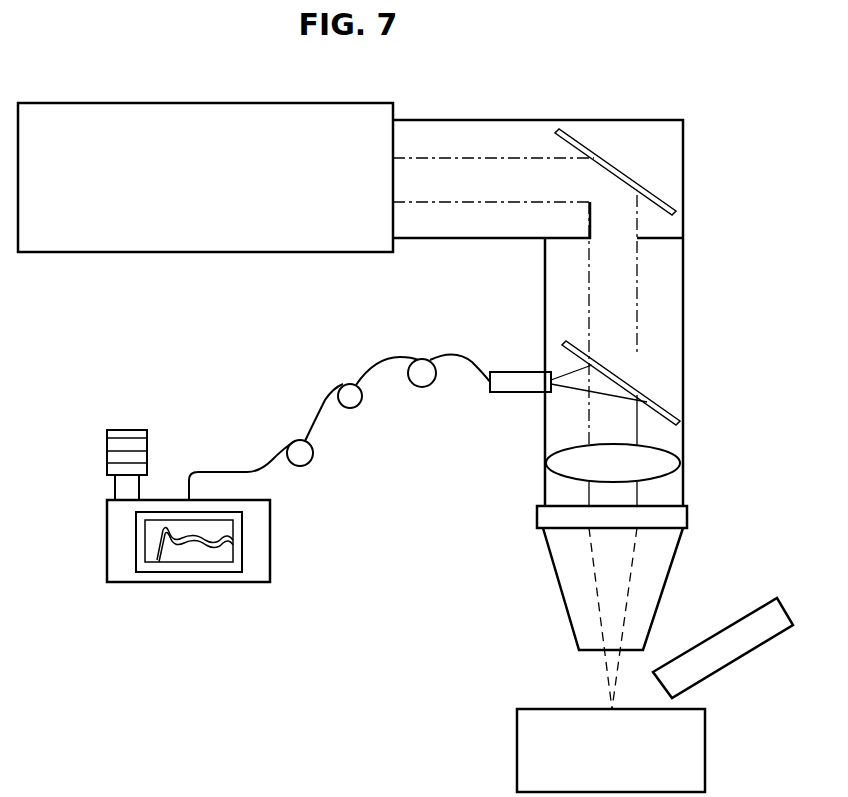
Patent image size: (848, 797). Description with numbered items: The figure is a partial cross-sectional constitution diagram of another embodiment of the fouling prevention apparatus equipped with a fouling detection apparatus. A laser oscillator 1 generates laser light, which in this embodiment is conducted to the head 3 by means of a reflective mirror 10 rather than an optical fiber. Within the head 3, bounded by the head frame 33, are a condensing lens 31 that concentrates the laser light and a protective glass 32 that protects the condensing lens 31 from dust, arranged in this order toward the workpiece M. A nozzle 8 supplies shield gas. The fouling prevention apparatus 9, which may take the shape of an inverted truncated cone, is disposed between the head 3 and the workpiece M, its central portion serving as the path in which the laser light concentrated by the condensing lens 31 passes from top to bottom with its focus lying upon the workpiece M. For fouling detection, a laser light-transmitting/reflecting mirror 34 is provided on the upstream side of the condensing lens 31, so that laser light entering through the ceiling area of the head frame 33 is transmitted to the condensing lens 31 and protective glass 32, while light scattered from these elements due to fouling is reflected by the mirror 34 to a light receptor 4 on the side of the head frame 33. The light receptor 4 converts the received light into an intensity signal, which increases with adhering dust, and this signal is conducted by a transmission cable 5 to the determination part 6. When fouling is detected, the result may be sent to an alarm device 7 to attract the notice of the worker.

The laser oscillator 1 is at (212, 241).
The head 3 is at (688, 278).
The head frame 33 is at (683, 340).
The laser light-transmitting/reflecting mirror 34 is at (657, 410).
The reflective mirror 10 is at (614, 166).
The condensing lens 31 is at (665, 460).
The protective glass 32 is at (678, 517).
The fouling prevention apparatus 9 is at (560, 590).
The nozzle 8 is at (778, 616).
The workpiece M is at (685, 745).
The light receptor 4 is at (518, 392).
The transmission cable 5 is at (352, 406).
The determination part 6 is at (270, 528).
The alarm device 7 is at (148, 440).